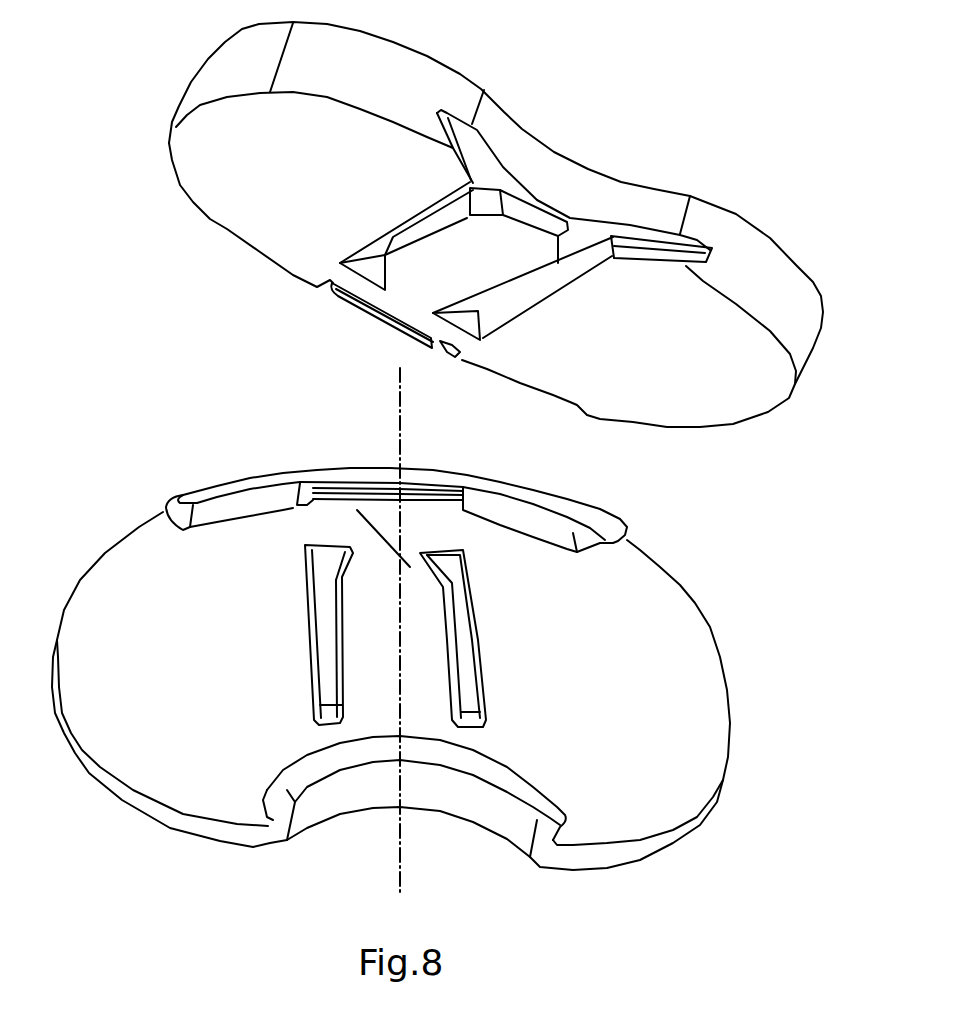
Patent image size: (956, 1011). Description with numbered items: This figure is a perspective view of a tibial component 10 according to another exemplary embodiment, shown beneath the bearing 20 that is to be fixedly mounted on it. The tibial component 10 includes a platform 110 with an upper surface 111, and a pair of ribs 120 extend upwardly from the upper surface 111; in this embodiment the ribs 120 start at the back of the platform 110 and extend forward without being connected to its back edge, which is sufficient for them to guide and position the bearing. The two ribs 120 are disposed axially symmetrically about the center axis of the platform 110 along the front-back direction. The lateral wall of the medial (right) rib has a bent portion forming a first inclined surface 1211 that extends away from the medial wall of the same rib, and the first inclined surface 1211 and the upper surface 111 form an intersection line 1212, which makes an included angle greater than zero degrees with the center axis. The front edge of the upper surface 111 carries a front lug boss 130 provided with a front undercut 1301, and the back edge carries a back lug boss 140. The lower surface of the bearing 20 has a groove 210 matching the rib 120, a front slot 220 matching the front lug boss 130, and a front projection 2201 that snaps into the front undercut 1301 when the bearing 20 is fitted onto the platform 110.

The tibial component 10 is at (433, 643).
The platform 110 is at (76, 745).
The upper surface 111 is at (698, 675).
The ribs 120 is at (445, 636).
The first inclined surface 1211 is at (428, 578).
The intersection line 1212 is at (400, 480).
The front lug boss 130 is at (383, 484).
The front undercut 1301 is at (313, 502).
The back lug boss 140 is at (275, 825).
The bearing 20 is at (499, 224).
The groove 210 is at (550, 283).
The front slot 220 is at (436, 353).
The front projection 2201 is at (370, 317).